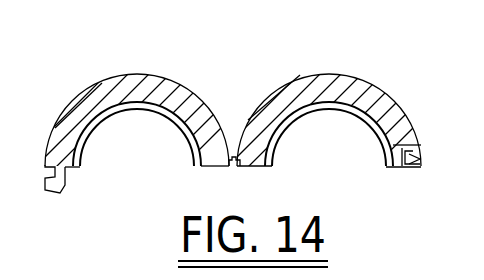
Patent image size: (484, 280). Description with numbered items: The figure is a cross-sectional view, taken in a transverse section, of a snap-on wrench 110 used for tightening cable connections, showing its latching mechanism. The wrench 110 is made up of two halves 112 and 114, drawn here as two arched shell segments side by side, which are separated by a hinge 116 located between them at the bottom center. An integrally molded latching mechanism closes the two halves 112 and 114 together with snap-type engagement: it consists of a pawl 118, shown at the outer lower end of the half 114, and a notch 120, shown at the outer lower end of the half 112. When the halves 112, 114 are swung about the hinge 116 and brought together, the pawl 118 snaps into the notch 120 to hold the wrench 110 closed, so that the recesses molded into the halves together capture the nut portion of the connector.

The wrench 110 is at (117, 42).
The half 112 is at (340, 78).
The half 114 is at (155, 80).
The hinge 116 is at (235, 170).
The pawl 118 is at (55, 194).
The notch 120 is at (404, 168).